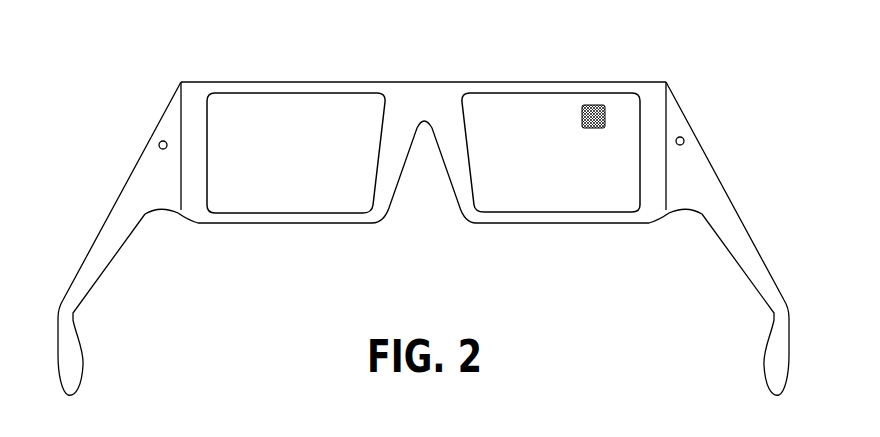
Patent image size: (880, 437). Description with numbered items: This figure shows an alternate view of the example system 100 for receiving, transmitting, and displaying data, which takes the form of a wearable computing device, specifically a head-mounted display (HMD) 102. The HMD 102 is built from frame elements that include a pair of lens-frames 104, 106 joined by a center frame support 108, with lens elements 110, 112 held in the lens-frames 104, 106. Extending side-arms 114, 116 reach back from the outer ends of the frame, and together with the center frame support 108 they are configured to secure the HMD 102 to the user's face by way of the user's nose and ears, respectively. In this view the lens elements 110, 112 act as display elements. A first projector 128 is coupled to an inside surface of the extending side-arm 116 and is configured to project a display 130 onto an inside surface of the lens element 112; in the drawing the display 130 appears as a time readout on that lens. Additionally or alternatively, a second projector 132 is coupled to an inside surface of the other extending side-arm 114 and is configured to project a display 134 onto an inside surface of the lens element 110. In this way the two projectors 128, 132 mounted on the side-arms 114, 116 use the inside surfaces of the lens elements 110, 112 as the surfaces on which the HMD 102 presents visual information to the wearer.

The system 100 is at (640, 325).
The head-mounted display 102 is at (224, 64).
The lens-frame 104 is at (627, 224).
The lens-frame 106 is at (226, 224).
The center frame support 108 is at (423, 82).
The lens element 110 is at (518, 204).
The lens element 112 is at (312, 204).
The extending side-arm 114 is at (715, 178).
The extending side-arm 116 is at (110, 207).
The first projector 128 is at (159, 145).
The display 130 is at (288, 122).
The second projector 132 is at (680, 137).
The display 134 is at (583, 118).